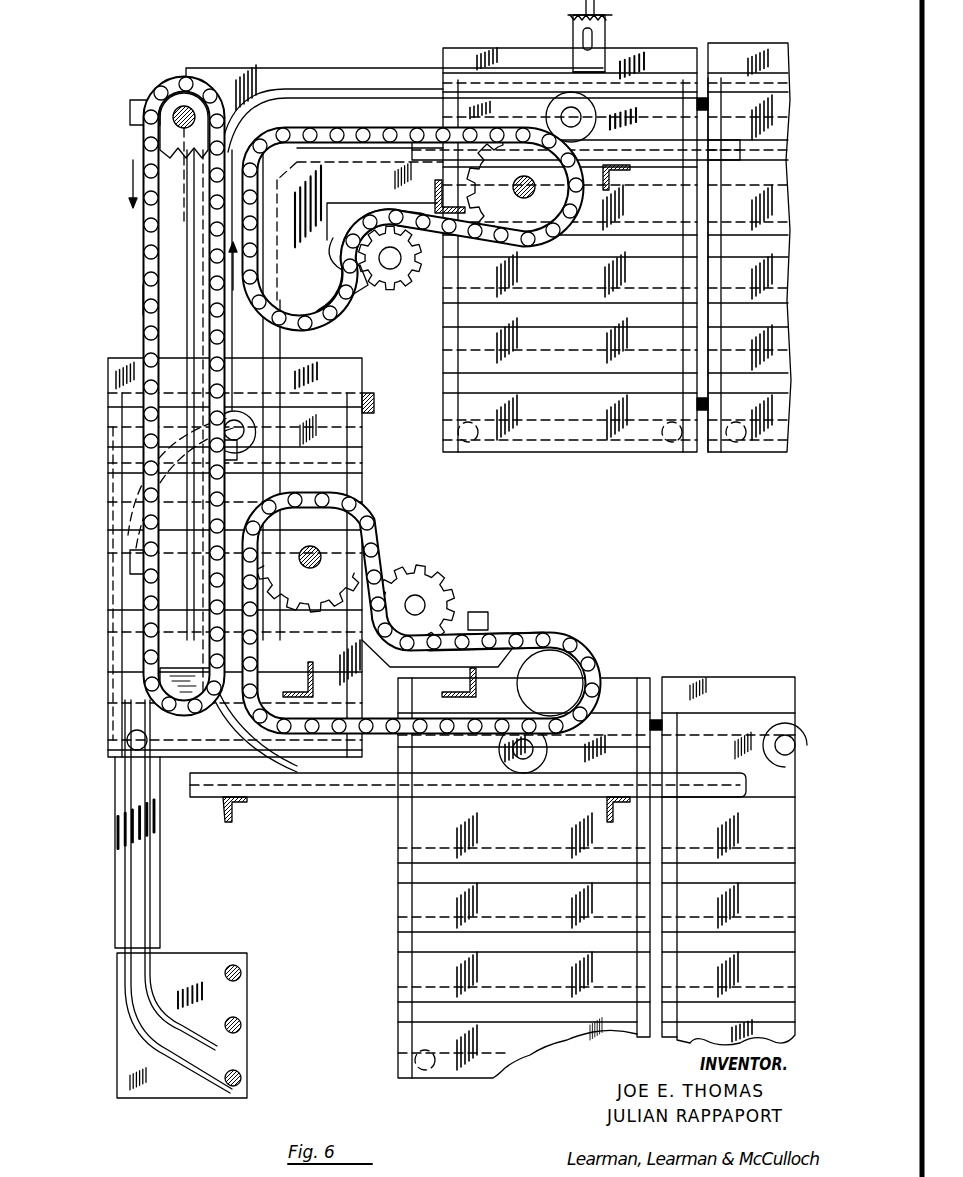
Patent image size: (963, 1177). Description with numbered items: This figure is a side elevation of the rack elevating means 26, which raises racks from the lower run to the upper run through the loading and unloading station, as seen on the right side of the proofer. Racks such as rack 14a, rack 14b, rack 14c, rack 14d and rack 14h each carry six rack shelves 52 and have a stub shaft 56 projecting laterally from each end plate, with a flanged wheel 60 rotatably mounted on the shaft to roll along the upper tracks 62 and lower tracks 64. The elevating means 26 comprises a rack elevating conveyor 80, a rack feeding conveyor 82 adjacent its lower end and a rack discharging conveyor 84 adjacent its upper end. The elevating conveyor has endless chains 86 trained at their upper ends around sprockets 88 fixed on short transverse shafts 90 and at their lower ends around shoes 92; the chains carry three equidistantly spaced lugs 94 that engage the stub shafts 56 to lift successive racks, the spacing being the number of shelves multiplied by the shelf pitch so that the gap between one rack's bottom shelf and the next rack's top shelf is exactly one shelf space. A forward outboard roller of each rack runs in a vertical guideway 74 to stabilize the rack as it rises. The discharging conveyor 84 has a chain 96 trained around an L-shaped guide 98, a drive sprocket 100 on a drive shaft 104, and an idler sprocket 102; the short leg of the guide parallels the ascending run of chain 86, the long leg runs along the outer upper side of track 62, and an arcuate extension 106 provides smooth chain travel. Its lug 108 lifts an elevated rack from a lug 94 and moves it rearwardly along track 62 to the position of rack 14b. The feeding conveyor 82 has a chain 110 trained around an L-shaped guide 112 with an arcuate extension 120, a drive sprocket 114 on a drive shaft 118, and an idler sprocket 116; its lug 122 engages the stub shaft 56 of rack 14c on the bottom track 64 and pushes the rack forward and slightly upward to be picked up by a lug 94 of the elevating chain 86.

The rack 14a is at (740, 50).
The rack 14b is at (634, 52).
The rack 14c is at (392, 893).
The rack 14d is at (120, 462).
The rack 14h is at (712, 677).
The elevating means 26 is at (264, 50).
The rack shelves 52 is at (645, 94).
The stub shaft 56 is at (581, 117).
The flanged wheel 60 is at (568, 104).
The upper tracks 62 is at (736, 160).
The lower tracks 64 is at (730, 790).
The guideway 74 is at (150, 896).
The rack elevating conveyor 80 is at (140, 252).
The rack feeding conveyor 82 is at (423, 613).
The rack discharging conveyor 84 is at (338, 130).
The endless chains 86 is at (145, 300).
The sprockets 88 is at (172, 100).
The transverse shafts 90 is at (183, 107).
The shoes 92 is at (163, 690).
The lugs 94 is at (130, 113).
The endless chains 96 is at (413, 182).
The L-shaped guide 98 is at (327, 305).
The drive sprocket 100 is at (520, 158).
The idler sprocket 102 is at (408, 272).
The drive shaft 104 is at (528, 199).
The arcuate extension 106 is at (338, 254).
The lug 108 is at (362, 290).
The endless chains 110 is at (509, 622).
The L-shaped guide 112 is at (556, 652).
The drive sprocket 114 is at (336, 583).
The idler sprocket 116 is at (443, 587).
The drive shaft 118 is at (320, 552).
The arcuate extension 120 is at (533, 630).
The lug 122 is at (478, 612).